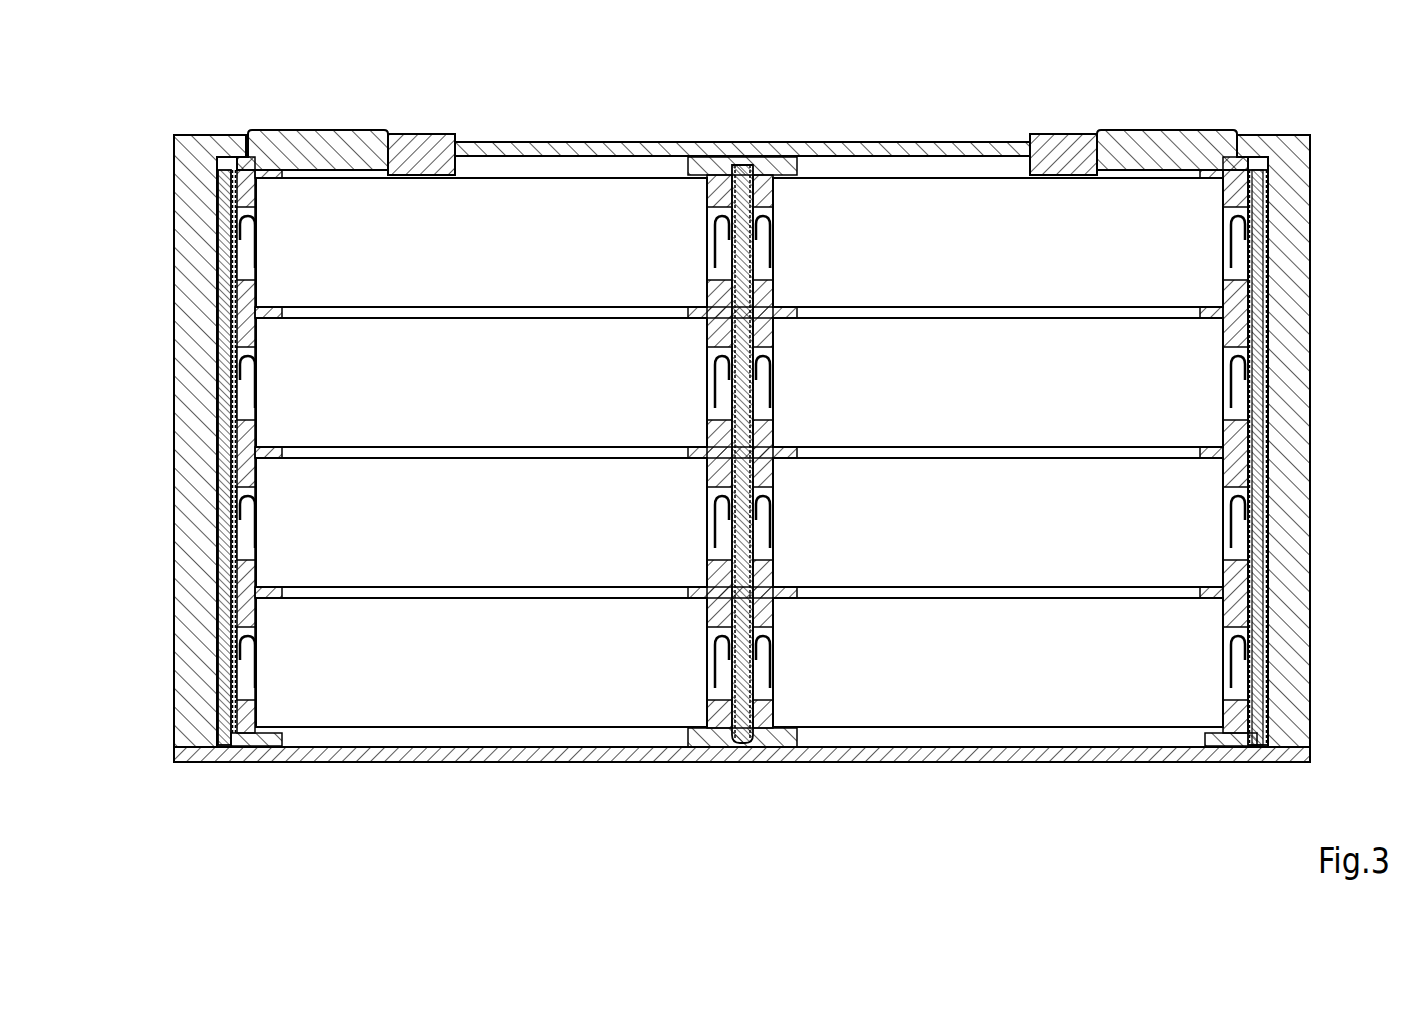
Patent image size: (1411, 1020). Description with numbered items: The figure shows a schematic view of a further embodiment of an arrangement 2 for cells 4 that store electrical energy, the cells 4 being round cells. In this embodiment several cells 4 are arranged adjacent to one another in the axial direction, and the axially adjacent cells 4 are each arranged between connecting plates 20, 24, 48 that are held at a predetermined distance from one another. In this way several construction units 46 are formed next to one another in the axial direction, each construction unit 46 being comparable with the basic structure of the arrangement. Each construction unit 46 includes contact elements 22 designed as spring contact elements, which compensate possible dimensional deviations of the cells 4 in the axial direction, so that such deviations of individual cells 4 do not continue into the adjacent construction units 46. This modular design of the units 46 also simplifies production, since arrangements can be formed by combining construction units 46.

The arrangement 2 is at (142, 98).
The cell 4 is at (474, 257).
The connecting plate 20 is at (743, 168).
The contact element 22 is at (717, 237).
The connecting plate 24 is at (220, 209).
The construction unit 46 is at (232, 788).
The connecting plate 48 is at (1258, 196).